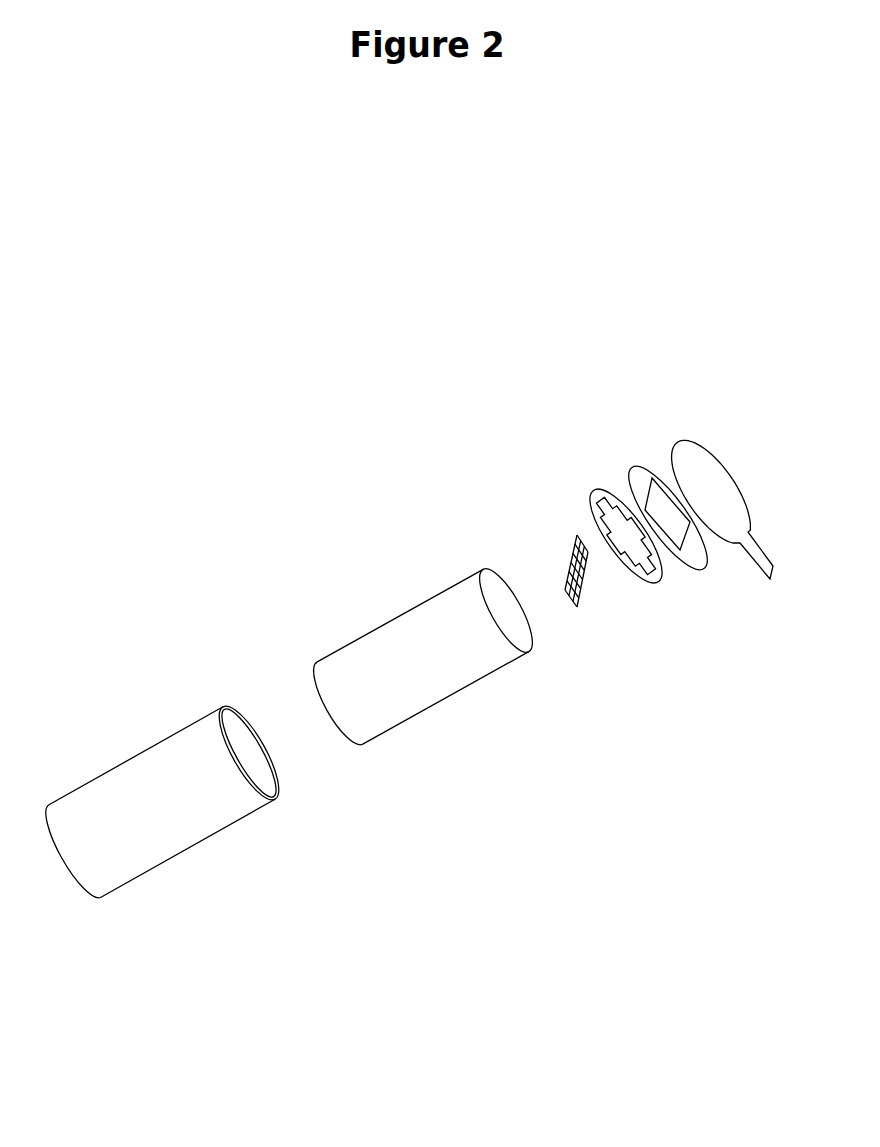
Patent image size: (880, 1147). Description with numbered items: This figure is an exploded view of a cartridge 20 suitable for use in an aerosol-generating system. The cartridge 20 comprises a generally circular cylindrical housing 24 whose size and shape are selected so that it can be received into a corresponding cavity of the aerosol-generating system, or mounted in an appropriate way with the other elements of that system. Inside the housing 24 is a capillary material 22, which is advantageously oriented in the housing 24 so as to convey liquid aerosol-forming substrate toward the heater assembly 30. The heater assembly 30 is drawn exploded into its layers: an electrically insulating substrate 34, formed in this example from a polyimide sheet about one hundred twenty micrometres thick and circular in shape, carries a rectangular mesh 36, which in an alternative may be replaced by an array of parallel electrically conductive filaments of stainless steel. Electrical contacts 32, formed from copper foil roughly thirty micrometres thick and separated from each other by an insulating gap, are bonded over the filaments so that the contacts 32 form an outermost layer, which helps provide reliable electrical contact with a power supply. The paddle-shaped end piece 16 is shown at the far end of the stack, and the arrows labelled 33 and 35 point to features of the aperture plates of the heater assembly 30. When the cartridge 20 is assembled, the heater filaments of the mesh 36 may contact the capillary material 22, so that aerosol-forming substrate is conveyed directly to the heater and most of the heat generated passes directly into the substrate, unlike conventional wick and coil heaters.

The end cap 16 is at (720, 498).
The cartridge 20 is at (340, 608).
The capillary material 22 is at (428, 652).
The housing 24 is at (175, 802).
The heater assembly 30 is at (463, 438).
The contacts 32 is at (596, 491).
The cross-shaped aperture 33 is at (653, 583).
The substrate 34 is at (693, 553).
The diamond-aperture plate 35 is at (658, 497).
The mesh 36 is at (570, 547).